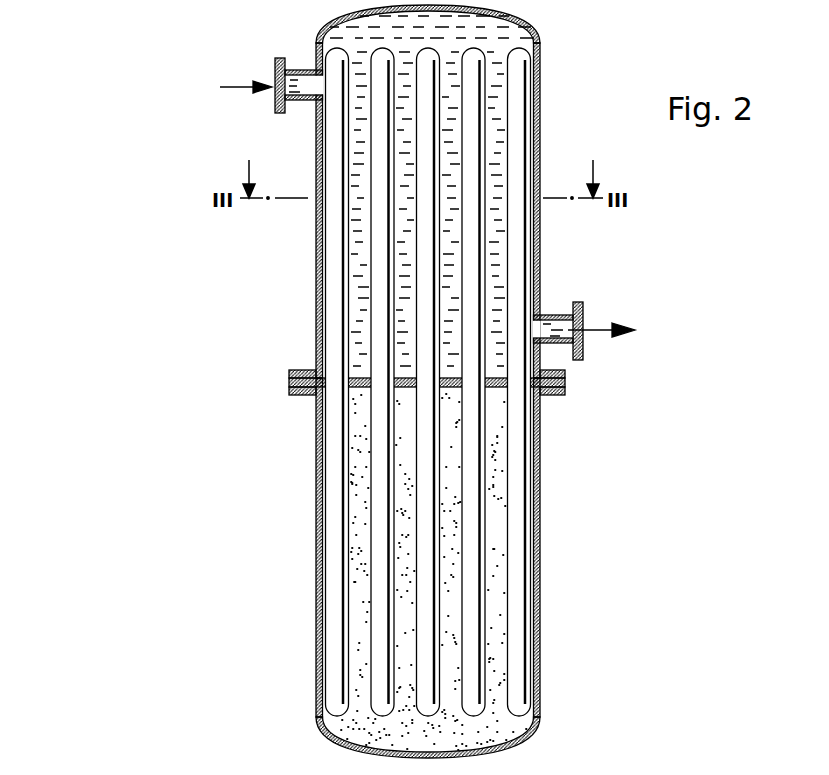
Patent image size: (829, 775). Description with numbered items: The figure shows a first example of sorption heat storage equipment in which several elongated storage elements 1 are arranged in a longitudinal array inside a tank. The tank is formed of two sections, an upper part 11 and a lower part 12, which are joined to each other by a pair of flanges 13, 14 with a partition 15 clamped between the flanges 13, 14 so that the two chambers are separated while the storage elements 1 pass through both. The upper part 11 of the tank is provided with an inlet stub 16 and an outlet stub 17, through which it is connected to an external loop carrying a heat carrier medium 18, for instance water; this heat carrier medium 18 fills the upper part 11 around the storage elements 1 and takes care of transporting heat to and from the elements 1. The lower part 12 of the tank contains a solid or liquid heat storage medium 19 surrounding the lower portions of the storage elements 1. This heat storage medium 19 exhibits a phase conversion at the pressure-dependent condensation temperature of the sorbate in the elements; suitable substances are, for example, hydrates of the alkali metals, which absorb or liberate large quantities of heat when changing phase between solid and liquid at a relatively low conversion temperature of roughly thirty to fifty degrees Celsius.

The storage elements 1 is at (472, 108).
The upper part of the tank 11 is at (533, 128).
The lower part of the tank 12 is at (538, 545).
The flange 13 is at (312, 370).
The flange 14 is at (306, 395).
The partition 15 is at (565, 382).
The inlet stub 16 is at (300, 71).
The outlet stub 17 is at (552, 315).
The heat carrier medium 18 is at (505, 35).
The heat storage medium 19 is at (507, 732).